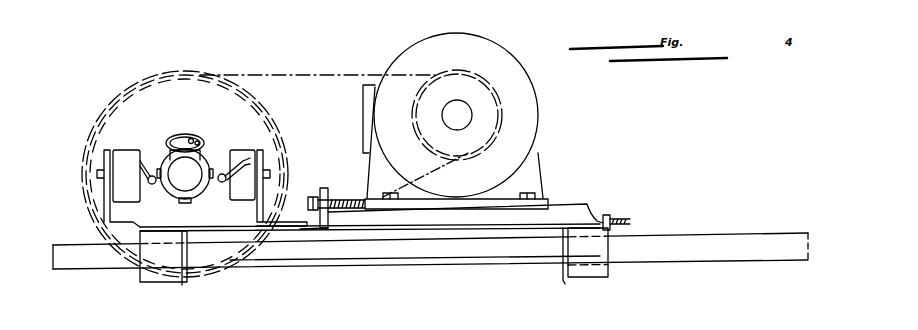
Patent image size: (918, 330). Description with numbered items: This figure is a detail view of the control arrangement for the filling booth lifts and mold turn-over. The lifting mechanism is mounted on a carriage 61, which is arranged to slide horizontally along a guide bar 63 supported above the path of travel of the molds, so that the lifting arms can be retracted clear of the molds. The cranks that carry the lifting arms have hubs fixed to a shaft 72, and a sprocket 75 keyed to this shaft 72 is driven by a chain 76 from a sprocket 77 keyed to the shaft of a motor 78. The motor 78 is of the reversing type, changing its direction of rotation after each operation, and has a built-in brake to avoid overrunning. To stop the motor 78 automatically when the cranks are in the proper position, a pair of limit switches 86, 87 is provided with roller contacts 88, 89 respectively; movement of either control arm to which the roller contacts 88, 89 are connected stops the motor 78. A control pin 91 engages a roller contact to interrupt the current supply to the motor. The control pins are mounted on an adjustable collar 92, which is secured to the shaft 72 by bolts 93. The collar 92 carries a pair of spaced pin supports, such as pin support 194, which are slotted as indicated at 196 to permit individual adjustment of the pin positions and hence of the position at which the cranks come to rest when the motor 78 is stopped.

The carriage 61 is at (600, 220).
The guide bar 63 is at (658, 243).
The shaft 72 is at (185, 174).
The sprocket 75 is at (186, 71).
The chain 76 is at (300, 74).
The sprocket 77 is at (470, 73).
The motor 78 is at (525, 97).
The limit switch 86 is at (246, 150).
The limit switch 87 is at (122, 150).
The roller contact 88 is at (221, 175).
The roller contact 89 is at (149, 165).
The control pin 91 is at (196, 138).
The adjustable collar 92 is at (205, 185).
The bolts 93 is at (182, 201).
The pin support 194 is at (178, 137).
The slot 196 is at (186, 135).